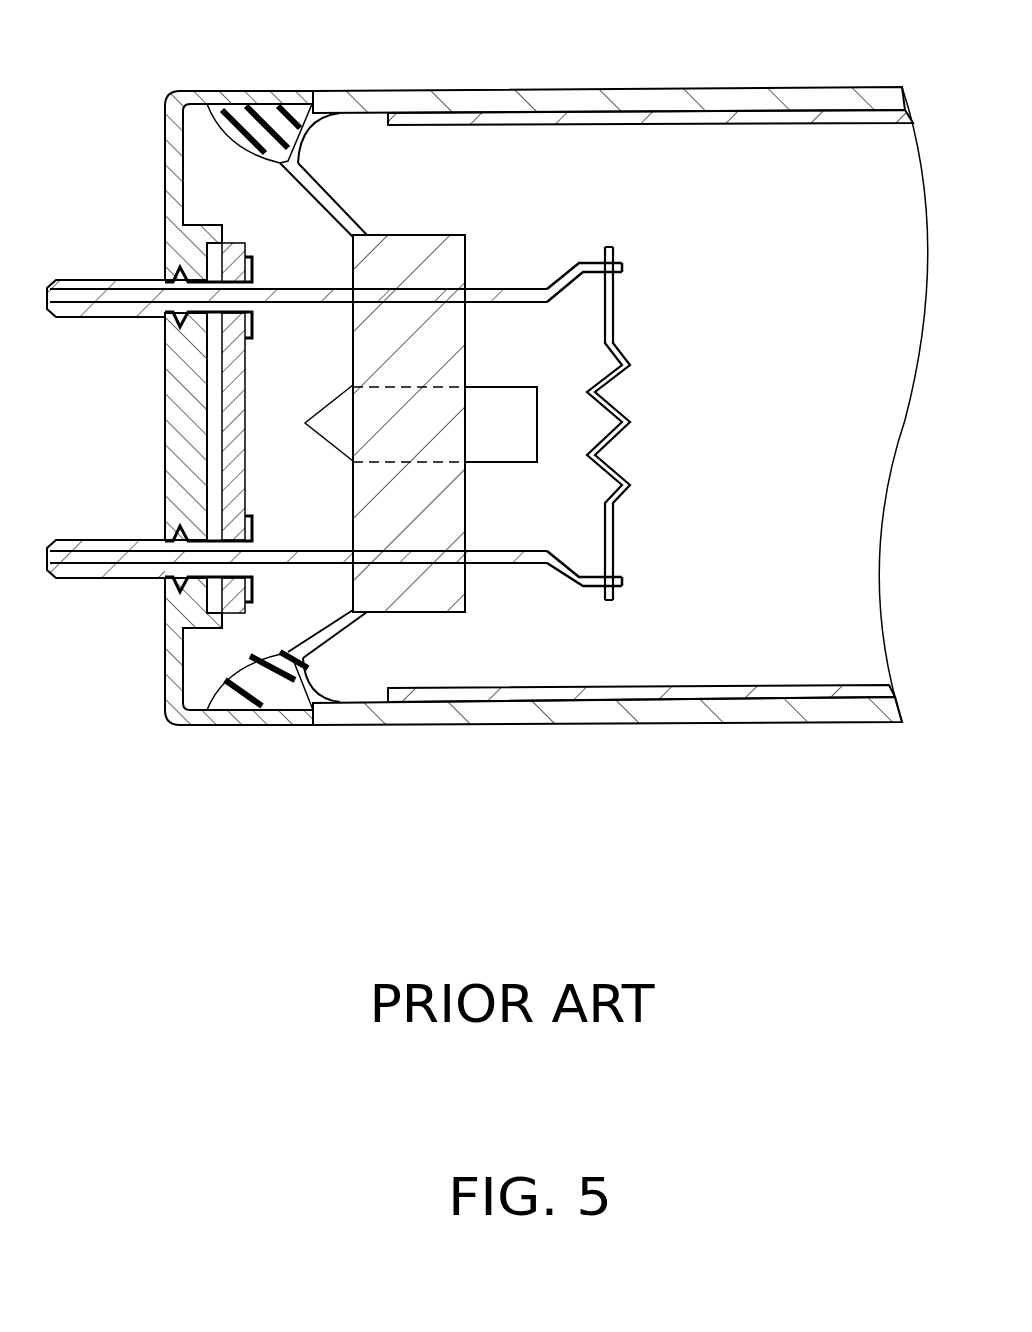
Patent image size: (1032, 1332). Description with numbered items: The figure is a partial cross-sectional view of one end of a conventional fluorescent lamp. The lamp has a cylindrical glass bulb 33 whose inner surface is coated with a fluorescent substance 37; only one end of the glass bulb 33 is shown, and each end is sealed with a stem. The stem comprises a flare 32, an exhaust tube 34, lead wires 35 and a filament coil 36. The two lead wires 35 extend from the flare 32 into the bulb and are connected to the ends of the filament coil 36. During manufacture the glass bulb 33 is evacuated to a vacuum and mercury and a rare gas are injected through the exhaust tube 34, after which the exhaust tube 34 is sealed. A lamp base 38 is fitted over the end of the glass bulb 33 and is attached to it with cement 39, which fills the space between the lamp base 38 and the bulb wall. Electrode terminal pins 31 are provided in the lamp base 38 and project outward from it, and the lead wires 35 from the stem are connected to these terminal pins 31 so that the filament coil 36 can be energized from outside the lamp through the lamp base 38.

The terminal pin 31 is at (98, 280).
The flare 32 is at (403, 242).
The glass bulb 33 is at (526, 95).
The exhaust tube 34 is at (503, 393).
The lead wire 35 is at (500, 290).
The filament coil 36 is at (614, 345).
The fluorescent substance 37 is at (727, 117).
The lamp base 38 is at (164, 140).
The cement 39 is at (260, 122).